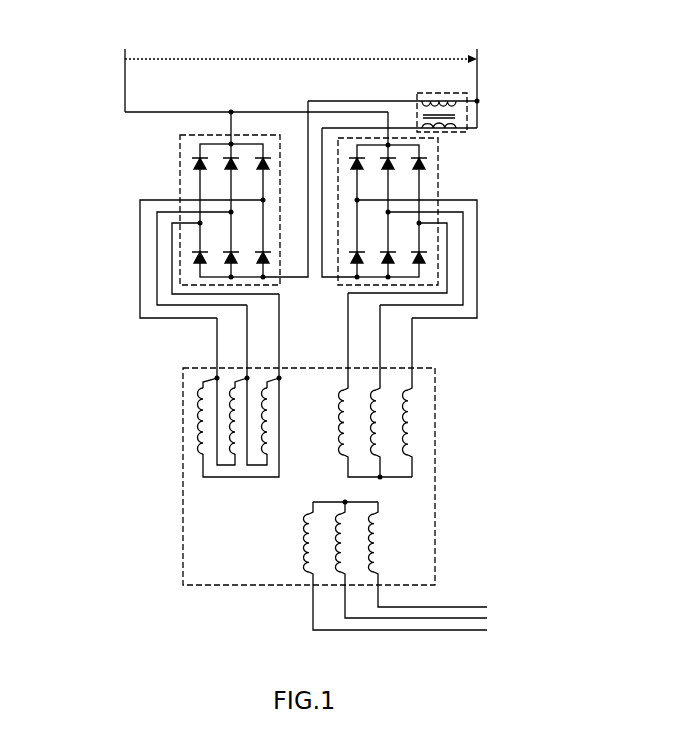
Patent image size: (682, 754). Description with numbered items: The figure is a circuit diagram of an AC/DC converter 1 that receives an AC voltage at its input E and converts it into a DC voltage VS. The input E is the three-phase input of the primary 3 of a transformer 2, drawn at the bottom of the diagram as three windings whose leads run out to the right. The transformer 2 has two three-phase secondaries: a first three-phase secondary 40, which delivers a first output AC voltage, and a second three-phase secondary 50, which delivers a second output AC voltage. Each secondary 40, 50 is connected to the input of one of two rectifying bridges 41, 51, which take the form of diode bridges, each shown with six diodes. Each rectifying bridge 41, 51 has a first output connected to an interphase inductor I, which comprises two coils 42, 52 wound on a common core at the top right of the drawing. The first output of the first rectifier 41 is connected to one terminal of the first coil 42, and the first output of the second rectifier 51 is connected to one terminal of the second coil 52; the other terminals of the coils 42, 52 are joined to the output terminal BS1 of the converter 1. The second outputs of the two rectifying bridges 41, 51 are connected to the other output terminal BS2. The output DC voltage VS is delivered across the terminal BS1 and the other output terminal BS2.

The AC/DC converter 1 is at (54, 148).
The transformer 2 is at (182, 536).
The primary 3 is at (300, 540).
The first three-phase secondary 40 is at (190, 417).
The first rectifying bridge 41 is at (180, 183).
The first coil of the interphase inductor 42 is at (425, 93).
The second three-phase secondary 50 is at (425, 424).
The second rectifying bridge 51 is at (440, 187).
The second coil of the interphase inductor 52 is at (447, 132).
The DC voltage VS is at (301, 50).
The output terminal BS1 is at (478, 48).
The other output terminal BS2 is at (123, 48).
The interphase inductor I is at (480, 122).
The input E is at (307, 593).